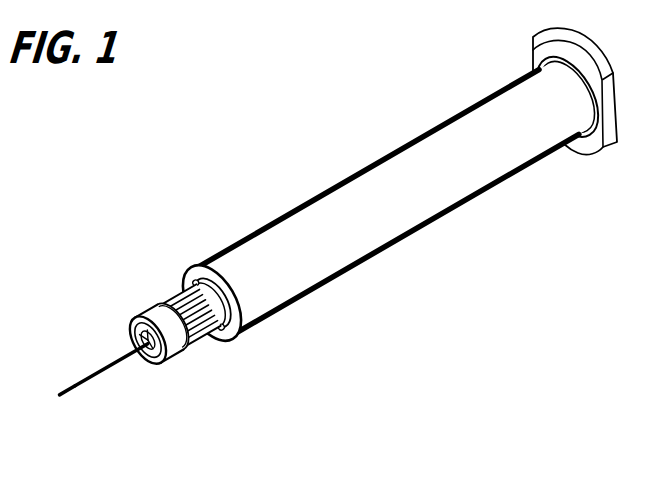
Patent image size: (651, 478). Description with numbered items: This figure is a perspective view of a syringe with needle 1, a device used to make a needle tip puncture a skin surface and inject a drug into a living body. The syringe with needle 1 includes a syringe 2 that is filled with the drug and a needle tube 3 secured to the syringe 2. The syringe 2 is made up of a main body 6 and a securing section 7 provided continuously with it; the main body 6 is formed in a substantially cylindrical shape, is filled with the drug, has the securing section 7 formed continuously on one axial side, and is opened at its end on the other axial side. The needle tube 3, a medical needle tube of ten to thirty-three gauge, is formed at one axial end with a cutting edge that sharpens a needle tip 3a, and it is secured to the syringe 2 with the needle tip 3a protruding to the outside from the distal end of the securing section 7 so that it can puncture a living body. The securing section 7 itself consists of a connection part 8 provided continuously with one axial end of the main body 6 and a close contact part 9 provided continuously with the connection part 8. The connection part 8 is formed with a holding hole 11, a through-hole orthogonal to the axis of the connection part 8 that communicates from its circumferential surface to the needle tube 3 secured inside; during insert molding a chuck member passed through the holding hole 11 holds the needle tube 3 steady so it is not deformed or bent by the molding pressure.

The syringe with needle 1 is at (301, 94).
The syringe 2 is at (381, 286).
The needle tube 3 is at (85, 411).
The needle tip 3a is at (58, 391).
The main body 6 is at (290, 308).
The securing section 7 is at (215, 378).
The connection part 8 is at (205, 347).
The close contact part 9 is at (166, 362).
The holding hole 11 is at (178, 320).